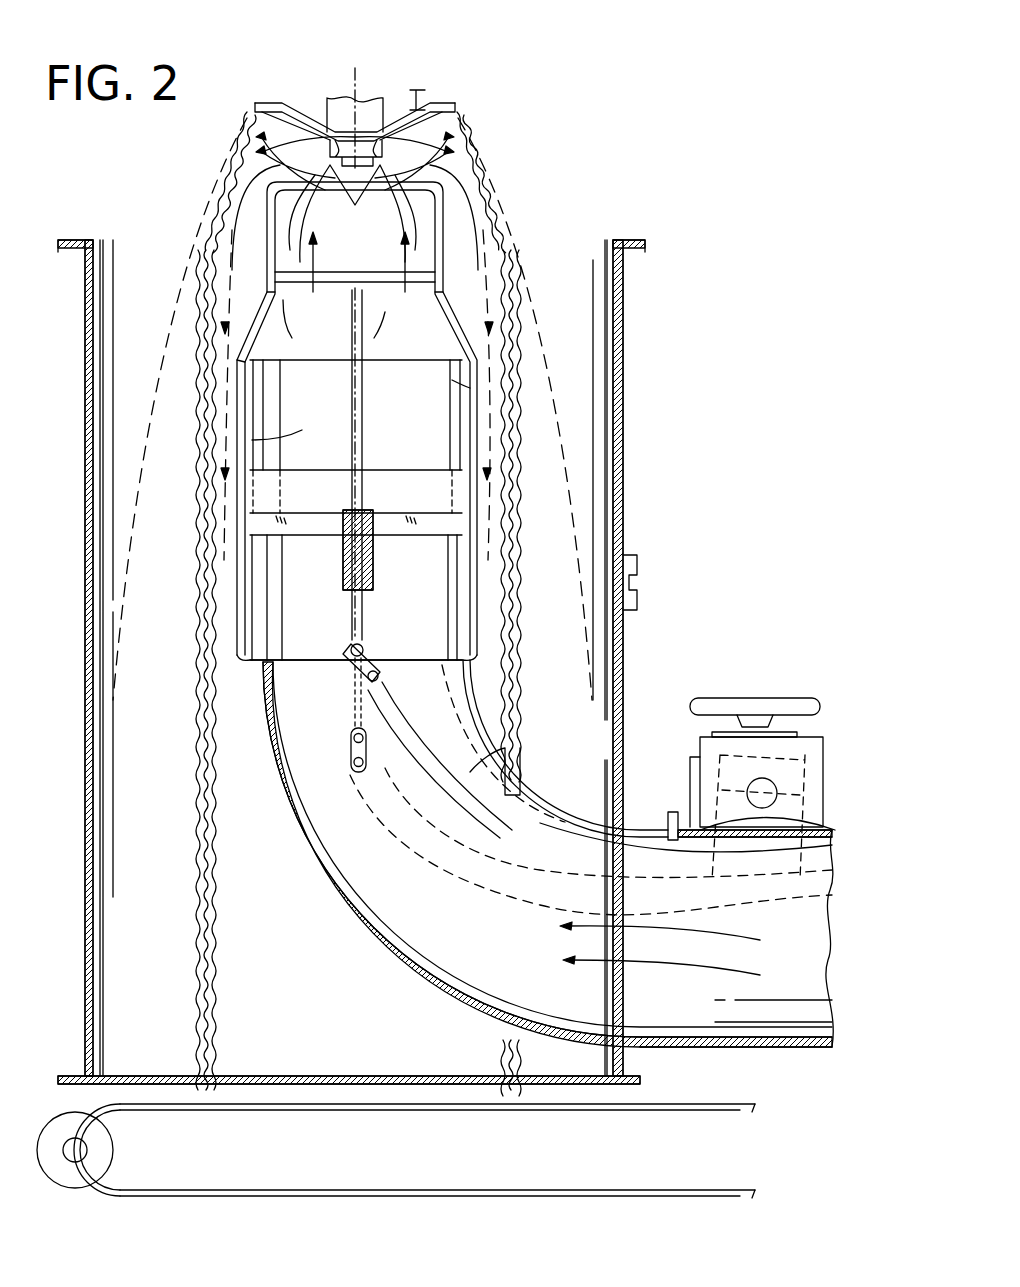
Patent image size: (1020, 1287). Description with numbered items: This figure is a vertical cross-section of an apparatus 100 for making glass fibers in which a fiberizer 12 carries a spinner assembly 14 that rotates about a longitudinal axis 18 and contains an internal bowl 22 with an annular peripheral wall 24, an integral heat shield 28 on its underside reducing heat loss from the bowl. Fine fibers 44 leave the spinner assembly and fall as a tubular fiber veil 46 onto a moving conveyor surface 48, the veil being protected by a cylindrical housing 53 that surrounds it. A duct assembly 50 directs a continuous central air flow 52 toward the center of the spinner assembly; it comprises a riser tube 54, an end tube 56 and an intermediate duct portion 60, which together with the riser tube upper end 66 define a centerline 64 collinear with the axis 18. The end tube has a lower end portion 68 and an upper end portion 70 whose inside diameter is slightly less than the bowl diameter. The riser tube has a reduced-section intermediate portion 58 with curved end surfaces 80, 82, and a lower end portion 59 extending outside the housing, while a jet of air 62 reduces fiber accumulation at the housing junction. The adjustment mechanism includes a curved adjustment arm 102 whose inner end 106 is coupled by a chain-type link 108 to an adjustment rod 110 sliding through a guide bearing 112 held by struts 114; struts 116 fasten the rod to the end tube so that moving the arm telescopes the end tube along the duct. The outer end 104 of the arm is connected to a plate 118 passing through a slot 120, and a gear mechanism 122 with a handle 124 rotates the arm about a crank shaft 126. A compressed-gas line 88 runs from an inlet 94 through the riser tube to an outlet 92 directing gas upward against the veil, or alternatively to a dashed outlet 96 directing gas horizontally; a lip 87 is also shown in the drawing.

The fiberizer 12 is at (419, 104).
The spinner assembly 14 is at (458, 132).
The longitudinal axis 18 is at (372, 82).
The bowl 22 is at (306, 130).
The peripheral wall 24 is at (458, 108).
The heat shield 28 is at (250, 157).
The fibers 44 is at (528, 278).
The fiber veil 46 is at (522, 418).
The conveyor surface 48 is at (398, 1106).
The duct assembly 50 is at (488, 705).
The central air flow 52 is at (395, 263).
The housing 53 is at (638, 422).
The riser tube 54 is at (278, 786).
The end tube 56 is at (247, 412).
The intermediate portion 58 is at (482, 1004).
The lower end portion 59 is at (800, 1048).
The intermediate duct portion 60 is at (247, 597).
The jet of air 62 is at (508, 722).
The centerline 64 is at (365, 452).
The upper end 66 is at (252, 448).
The lower end portion 68 is at (468, 392).
The upper end portion 70 is at (440, 248).
The curved end surface 80 is at (570, 806).
The curved end surface 82 is at (367, 922).
The canister bottom 87 is at (246, 655).
The compressed-gas line 88 is at (547, 873).
The outlet 92 is at (513, 750).
The inlet 94 is at (656, 805).
The outlet 96 is at (500, 634).
The apparatus 100 is at (660, 293).
The adjustment arm 102 is at (490, 890).
The outer end 104 is at (782, 862).
The inner end 106 is at (395, 674).
The chain-type link 108 is at (350, 735).
The adjustment rod 110 is at (366, 614).
The guide bearing 112 is at (348, 590).
The struts 114 is at (320, 522).
The struts 116 is at (353, 325).
The plate 118 is at (790, 800).
The slot 120 is at (820, 830).
The gear mechanism 122 is at (793, 755).
The handle 124 is at (798, 705).
The crank shaft 126 is at (759, 780).